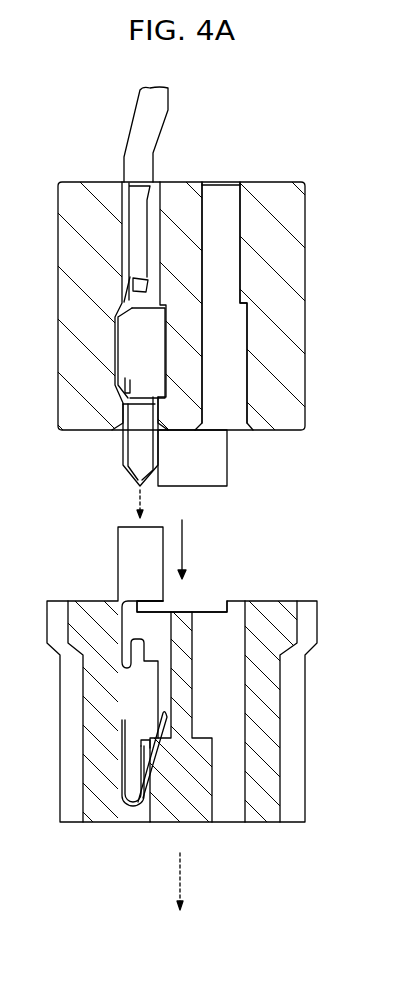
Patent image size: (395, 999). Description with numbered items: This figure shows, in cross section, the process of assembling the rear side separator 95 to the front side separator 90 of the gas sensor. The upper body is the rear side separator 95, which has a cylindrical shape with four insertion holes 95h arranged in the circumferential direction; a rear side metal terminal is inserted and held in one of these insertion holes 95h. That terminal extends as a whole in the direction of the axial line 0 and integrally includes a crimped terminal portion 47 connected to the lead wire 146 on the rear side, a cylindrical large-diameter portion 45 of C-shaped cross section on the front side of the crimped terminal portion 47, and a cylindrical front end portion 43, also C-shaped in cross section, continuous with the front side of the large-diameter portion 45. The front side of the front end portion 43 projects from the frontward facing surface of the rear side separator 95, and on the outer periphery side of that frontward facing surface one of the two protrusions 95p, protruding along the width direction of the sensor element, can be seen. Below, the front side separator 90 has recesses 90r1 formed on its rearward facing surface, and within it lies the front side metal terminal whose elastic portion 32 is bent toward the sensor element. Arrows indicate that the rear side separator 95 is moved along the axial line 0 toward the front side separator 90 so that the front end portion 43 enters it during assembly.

The lead wire 146 is at (140, 120).
The crimped terminal portion 47 is at (135, 230).
The large-diameter portion 45 is at (133, 357).
The front end portion 43 is at (122, 454).
The rear side separator 95 is at (290, 360).
The insertion hole 95h is at (228, 417).
The protrusion 95p is at (208, 473).
The recess 90r1 is at (208, 612).
The front side separator 90 is at (292, 673).
The elastic portion 32 is at (158, 770).
The axial line 0 is at (179, 900).